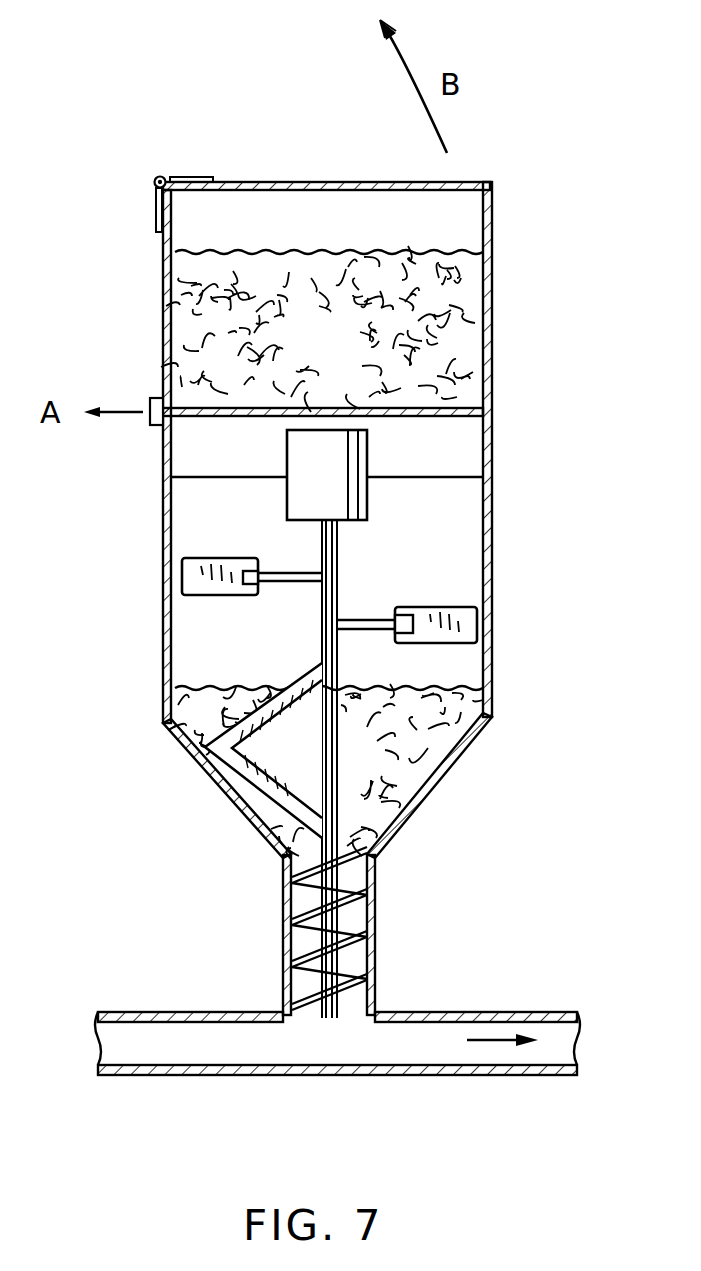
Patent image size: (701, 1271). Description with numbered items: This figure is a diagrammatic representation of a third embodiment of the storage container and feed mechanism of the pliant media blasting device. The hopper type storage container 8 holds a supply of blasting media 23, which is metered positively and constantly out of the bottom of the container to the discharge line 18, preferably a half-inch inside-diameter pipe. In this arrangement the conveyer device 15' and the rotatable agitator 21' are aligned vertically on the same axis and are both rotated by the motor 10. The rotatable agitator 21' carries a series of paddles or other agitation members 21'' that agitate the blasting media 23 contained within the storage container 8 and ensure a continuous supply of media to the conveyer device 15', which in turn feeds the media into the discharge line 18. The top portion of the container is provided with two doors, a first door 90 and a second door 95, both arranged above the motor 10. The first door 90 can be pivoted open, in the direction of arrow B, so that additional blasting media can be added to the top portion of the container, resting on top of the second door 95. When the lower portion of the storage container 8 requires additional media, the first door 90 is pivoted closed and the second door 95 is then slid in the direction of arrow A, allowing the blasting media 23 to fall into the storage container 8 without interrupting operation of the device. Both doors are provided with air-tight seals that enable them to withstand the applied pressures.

The first door 90 is at (466, 183).
The second door 95 is at (452, 406).
The motor 10 is at (358, 488).
The agitation members 21'' is at (187, 583).
The rotatable agitator 21' is at (337, 636).
The storage container 8 is at (492, 645).
The blasting media 23 is at (335, 356).
The conveyer device 15' is at (391, 928).
The discharge line 18 is at (440, 1076).